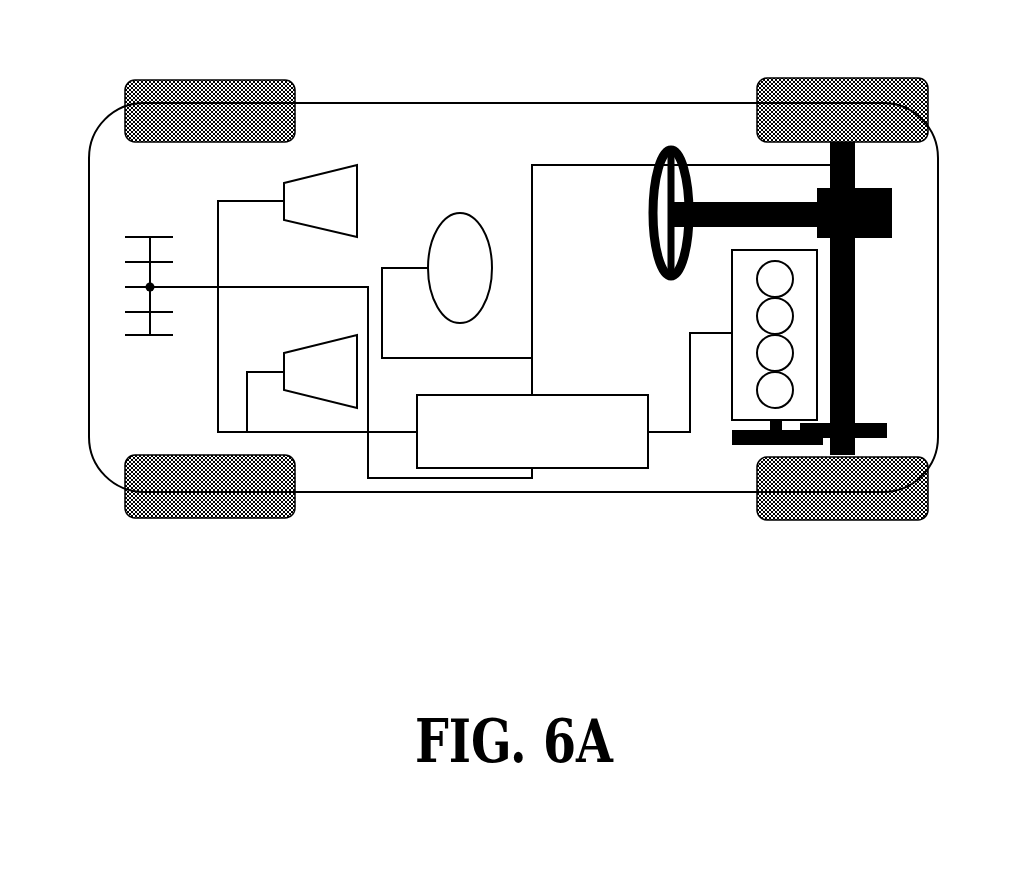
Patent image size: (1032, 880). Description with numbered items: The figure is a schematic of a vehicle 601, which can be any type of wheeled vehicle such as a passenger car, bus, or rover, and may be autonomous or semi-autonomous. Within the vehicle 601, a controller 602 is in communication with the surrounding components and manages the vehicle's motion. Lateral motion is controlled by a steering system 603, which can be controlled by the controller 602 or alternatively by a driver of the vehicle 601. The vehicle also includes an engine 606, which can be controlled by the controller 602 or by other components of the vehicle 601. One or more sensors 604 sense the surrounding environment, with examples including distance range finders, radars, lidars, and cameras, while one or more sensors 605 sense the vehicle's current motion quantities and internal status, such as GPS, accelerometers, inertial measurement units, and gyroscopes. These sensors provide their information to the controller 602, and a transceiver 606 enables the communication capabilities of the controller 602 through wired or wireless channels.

The vehicle 601 is at (435, 102).
The controller 602 is at (555, 395).
The steering system 603 is at (893, 212).
The sensors 604 is at (345, 162).
The sensors 605 is at (430, 253).
The engine 606 is at (138, 237).